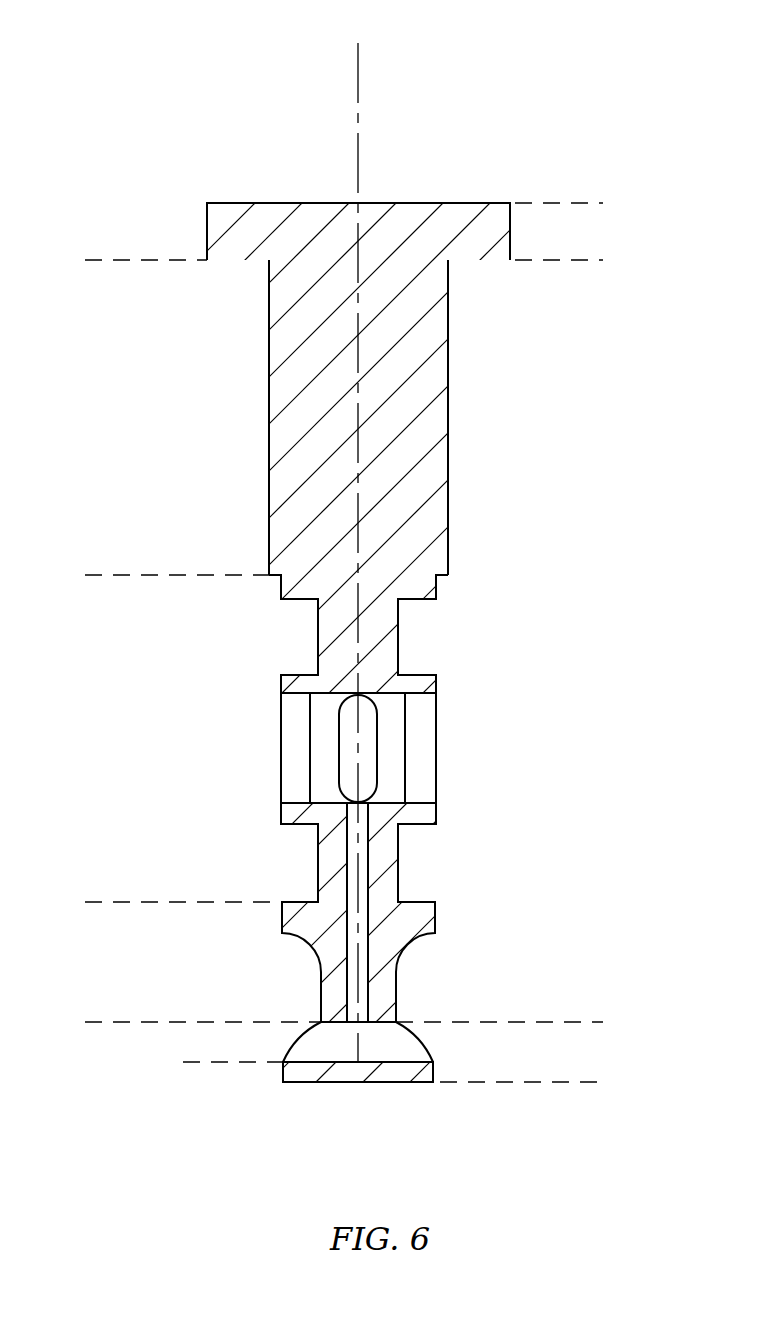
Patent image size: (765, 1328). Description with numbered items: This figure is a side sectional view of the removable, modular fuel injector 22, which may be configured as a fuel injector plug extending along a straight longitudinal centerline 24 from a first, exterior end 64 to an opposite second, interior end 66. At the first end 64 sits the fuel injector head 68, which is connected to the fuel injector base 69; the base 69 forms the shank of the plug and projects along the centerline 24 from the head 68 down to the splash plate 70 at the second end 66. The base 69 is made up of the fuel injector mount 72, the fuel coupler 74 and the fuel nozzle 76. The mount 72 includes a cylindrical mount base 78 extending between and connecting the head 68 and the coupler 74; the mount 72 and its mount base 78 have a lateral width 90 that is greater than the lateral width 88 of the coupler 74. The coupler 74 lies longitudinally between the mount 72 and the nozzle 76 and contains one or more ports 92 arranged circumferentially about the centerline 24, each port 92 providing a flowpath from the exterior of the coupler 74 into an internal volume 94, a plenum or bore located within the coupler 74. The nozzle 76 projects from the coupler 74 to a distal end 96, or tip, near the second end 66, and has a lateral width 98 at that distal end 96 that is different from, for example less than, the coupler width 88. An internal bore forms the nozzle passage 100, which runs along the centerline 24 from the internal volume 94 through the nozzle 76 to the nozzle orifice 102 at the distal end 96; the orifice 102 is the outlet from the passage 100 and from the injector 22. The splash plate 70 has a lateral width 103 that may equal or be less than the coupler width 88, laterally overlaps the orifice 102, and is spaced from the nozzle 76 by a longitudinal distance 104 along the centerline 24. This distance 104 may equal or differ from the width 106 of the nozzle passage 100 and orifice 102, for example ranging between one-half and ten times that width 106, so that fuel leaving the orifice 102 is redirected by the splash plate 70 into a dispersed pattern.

The fuel injector 22 is at (481, 71).
The longitudinal centerline 24 is at (357, 57).
The first end 64 is at (465, 203).
The second end 66 is at (333, 1083).
The fuel injector head 68 is at (604, 203).
The fuel injector base 69 is at (604, 260).
The splash plate 70 is at (604, 1022).
The fuel injector mount 72 is at (90, 260).
The fuel injector fuel coupler 74 is at (90, 575).
The fuel injector fuel nozzle 76 is at (90, 902).
The injector mount base 78 is at (452, 417).
The lateral width of fuel coupler 88 is at (225, 683).
The lateral width of injector mount 90 is at (212, 328).
The ports 92 is at (293, 740).
The internal volume 94 is at (322, 783).
The distal end of fuel nozzle 96 is at (333, 1027).
The lateral width of fuel nozzle 98 is at (268, 990).
The nozzle passage 100 is at (365, 893).
The nozzle orifice 102 is at (363, 1027).
The lateral width of splash plate 103 is at (283, 1090).
The longitudinal distance 104 is at (193, 1105).
The width of nozzle passage 106 is at (420, 968).